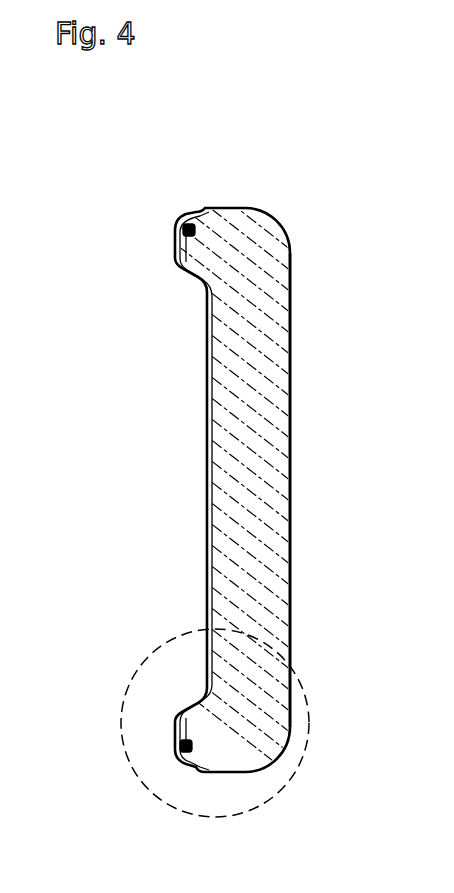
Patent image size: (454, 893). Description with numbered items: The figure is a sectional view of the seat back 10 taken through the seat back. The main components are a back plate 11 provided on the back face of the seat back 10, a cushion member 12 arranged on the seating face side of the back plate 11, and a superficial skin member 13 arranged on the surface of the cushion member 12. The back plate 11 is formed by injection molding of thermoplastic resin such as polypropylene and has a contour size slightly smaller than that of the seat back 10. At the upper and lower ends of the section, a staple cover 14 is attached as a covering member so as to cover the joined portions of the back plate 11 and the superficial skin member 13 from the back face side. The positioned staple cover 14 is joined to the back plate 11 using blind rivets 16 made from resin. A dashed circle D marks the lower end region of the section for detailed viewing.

The seat back 10 is at (383, 131).
The back plate 11 is at (208, 463).
The cushion member 12 is at (283, 398).
The superficial skin member 13 is at (291, 325).
The staple cover 14 is at (177, 233).
The blind rivet 16 is at (177, 252).
The enlarged detail region D is at (302, 752).